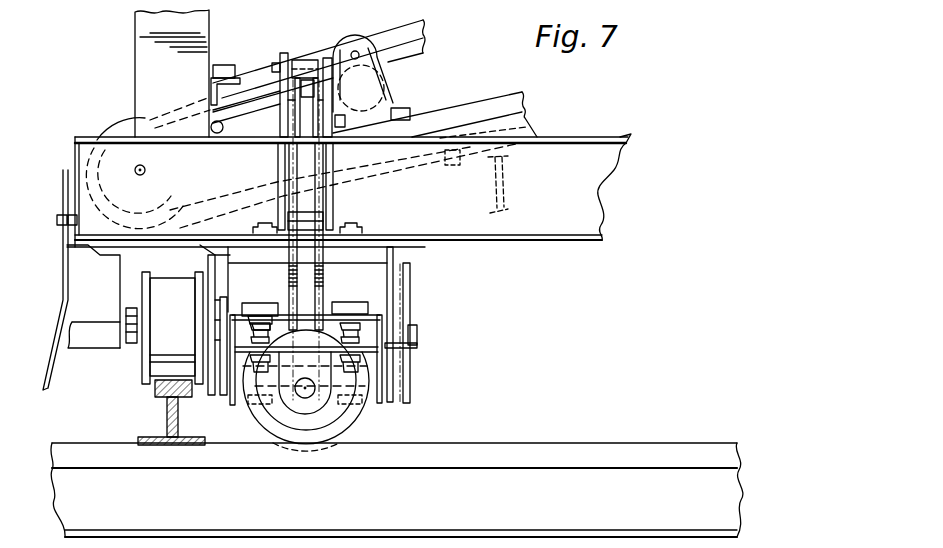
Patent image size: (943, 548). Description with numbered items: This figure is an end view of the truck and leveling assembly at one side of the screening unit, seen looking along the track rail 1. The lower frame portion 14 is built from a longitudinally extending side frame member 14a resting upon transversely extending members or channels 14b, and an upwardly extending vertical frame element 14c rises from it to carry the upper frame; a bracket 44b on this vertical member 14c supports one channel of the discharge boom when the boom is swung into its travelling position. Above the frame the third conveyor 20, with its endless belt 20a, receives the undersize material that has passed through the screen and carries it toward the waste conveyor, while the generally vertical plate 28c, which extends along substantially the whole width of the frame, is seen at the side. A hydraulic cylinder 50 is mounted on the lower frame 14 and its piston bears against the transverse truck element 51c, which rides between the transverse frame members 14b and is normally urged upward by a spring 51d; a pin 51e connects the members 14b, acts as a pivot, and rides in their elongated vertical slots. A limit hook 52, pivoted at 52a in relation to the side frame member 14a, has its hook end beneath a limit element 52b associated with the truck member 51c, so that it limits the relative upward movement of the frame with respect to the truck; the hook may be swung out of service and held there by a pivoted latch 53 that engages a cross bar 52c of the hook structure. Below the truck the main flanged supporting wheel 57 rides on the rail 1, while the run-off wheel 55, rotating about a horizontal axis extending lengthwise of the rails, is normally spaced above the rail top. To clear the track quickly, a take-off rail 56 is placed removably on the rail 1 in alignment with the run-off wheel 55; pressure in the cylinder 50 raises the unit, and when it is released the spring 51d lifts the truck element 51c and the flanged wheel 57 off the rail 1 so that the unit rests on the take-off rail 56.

The main rail 1 is at (72, 493).
The lower frame portion 14 is at (621, 131).
The longitudinally extending member 14a is at (593, 188).
The transversely extending member 14b is at (213, 257).
The upwardly extending frame element 14c is at (146, 63).
The number 3 conveyor 20 is at (469, 104).
The endless belt 20a is at (413, 34).
The vertical plate 28c is at (63, 297).
The bracket 44b is at (228, 68).
The hydraulic cylinder 50 is at (296, 92).
The truck element 51c is at (385, 402).
The spring 51d is at (368, 308).
The pin 51e is at (417, 333).
The limit hook 52 is at (323, 285).
The pivot 52a is at (312, 213).
The limit element 52b is at (360, 334).
The cross bar 52c is at (310, 313).
The pivoted latch 53 is at (380, 87).
The run-off wheel 55 is at (163, 358).
The take-off rail 56 is at (170, 410).
The main flanged supporting wheel 57 is at (320, 428).